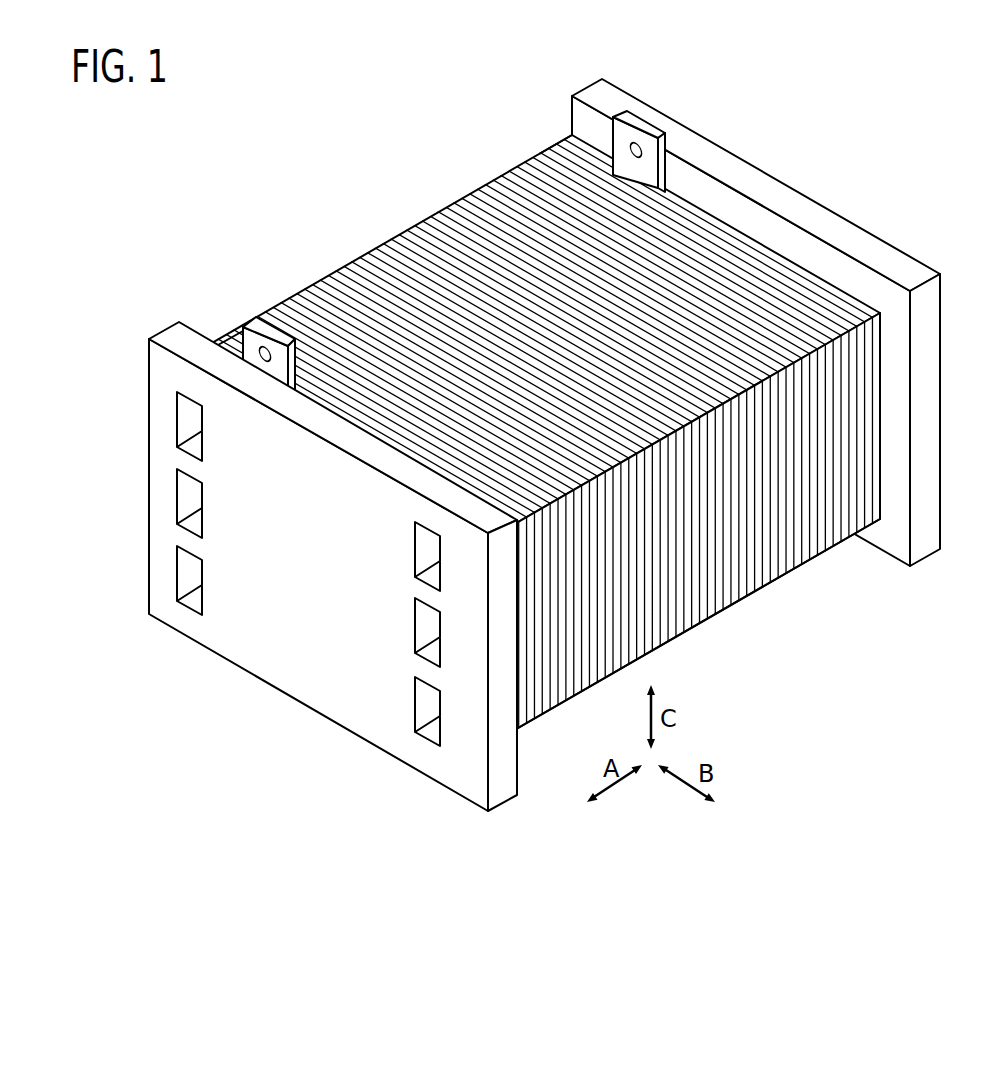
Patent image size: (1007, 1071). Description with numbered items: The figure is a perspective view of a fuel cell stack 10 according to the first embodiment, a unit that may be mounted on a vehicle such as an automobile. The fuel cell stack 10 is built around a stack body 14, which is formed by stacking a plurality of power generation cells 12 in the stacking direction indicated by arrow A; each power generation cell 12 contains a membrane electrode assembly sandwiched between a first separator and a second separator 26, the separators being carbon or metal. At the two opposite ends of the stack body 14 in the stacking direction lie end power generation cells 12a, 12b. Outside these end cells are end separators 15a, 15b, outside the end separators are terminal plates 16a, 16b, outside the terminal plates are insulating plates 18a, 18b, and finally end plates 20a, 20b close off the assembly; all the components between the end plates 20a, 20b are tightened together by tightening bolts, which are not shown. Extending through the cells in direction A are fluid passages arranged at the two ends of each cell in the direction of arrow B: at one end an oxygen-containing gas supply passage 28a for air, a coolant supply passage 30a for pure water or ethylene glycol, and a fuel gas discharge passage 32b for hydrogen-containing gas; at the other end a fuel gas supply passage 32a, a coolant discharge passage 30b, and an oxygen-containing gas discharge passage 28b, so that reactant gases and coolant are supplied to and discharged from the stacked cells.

The fuel cell stack 10 is at (261, 154).
The power generation cell 12 is at (344, 281).
The end power generation cell 12a is at (229, 338).
The end power generation cell 12b is at (563, 147).
The stack body 14 is at (525, 422).
The end separator 15a is at (230, 342).
The end separator 15b is at (566, 140).
The terminal plate 16a is at (277, 370).
The terminal plate 16b is at (790, 270).
The insulating plate 18a is at (345, 432).
The insulating plate 18b is at (833, 280).
The end plate 20a is at (305, 548).
The end plate 20b is at (768, 355).
The second separator 26 is at (828, 563).
The oxygen-containing gas supply passage 28a is at (185, 420).
The oxygen-containing gas discharge passage 28b is at (432, 706).
The coolant supply passage 30a is at (185, 488).
The coolant discharge passage 30b is at (432, 631).
The fuel gas supply passage 32a is at (432, 561).
The fuel gas discharge passage 32b is at (185, 568).